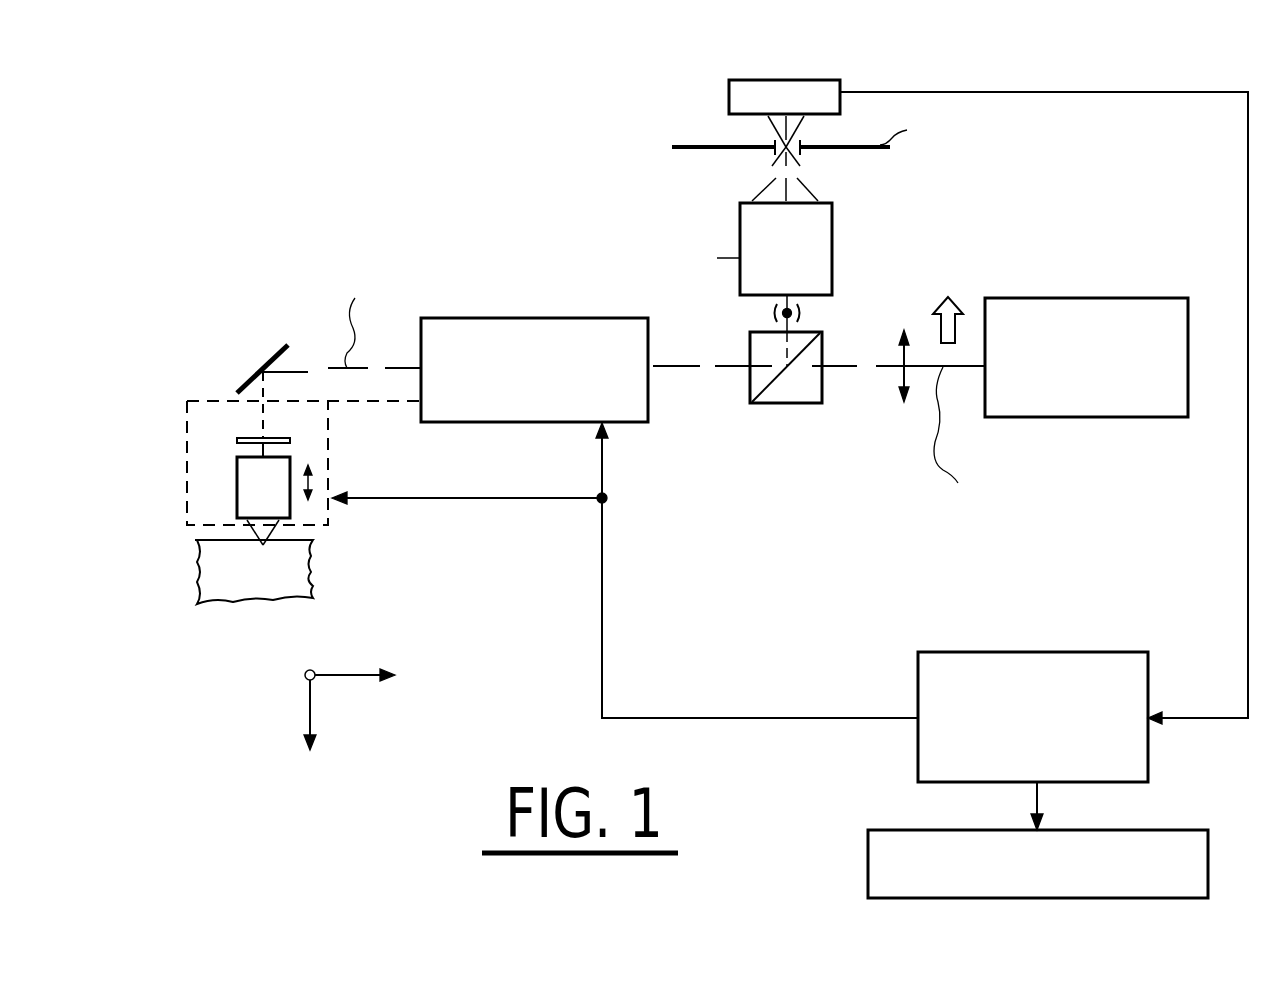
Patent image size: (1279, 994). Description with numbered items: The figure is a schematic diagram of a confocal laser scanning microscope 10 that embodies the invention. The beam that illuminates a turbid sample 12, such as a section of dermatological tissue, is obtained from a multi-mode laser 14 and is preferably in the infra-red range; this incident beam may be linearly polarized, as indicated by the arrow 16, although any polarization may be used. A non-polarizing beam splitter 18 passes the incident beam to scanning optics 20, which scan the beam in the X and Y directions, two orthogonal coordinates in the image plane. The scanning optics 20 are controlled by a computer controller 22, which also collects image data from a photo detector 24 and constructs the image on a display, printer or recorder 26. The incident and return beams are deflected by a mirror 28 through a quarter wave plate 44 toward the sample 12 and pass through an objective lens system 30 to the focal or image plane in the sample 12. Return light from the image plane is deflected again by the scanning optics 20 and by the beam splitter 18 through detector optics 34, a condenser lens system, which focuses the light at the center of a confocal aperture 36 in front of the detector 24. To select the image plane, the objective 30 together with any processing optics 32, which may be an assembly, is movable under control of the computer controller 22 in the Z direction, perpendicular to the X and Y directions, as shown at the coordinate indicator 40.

The confocal laser scanning microscope 10 is at (553, 192).
The turbid sample 12 is at (275, 565).
The multi-mode laser 14 is at (1085, 418).
The arrow 16 is at (950, 298).
The non-polarizing beam splitter 18 is at (783, 405).
The scanning optics 20 is at (622, 425).
The computer controller 22 is at (918, 747).
The photo detector 24 is at (728, 92).
The display, printer or recorder 26 is at (868, 857).
The mirror 28 is at (258, 372).
The objective lens system 30 is at (233, 488).
The processing optics 32 is at (240, 408).
The detector optics 34 is at (831, 234).
The confocal aperture 36 is at (800, 142).
The coordinate directions 40 is at (375, 730).
The quarter wave plate 44 is at (237, 440).